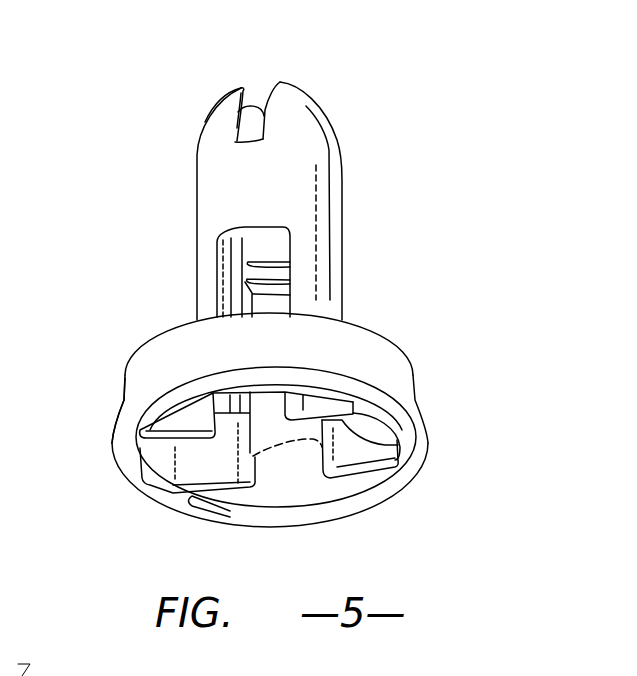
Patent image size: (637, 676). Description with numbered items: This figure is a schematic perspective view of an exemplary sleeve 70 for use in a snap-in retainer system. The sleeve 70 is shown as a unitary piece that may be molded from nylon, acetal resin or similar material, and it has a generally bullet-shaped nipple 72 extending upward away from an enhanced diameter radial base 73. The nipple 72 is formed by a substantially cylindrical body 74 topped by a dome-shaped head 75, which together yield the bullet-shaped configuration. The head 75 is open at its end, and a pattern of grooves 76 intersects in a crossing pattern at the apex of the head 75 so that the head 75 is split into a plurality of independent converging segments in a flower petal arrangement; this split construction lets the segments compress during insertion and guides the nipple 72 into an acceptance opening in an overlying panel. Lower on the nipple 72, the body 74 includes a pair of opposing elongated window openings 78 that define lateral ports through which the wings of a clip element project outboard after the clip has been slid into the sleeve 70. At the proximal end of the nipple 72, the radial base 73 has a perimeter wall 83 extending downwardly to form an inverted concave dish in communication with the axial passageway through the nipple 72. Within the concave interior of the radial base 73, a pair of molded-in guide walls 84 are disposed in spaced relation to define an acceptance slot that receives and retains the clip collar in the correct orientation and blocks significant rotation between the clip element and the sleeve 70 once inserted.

The sleeve 70 is at (352, 90).
The nipple 72 is at (343, 180).
The radial base 73 is at (383, 338).
The body 74 is at (197, 210).
The head 75 is at (226, 108).
The grooves 76 is at (247, 125).
The window openings 78 is at (275, 305).
The perimeter wall 83 is at (123, 397).
The guide walls 84 is at (402, 447).